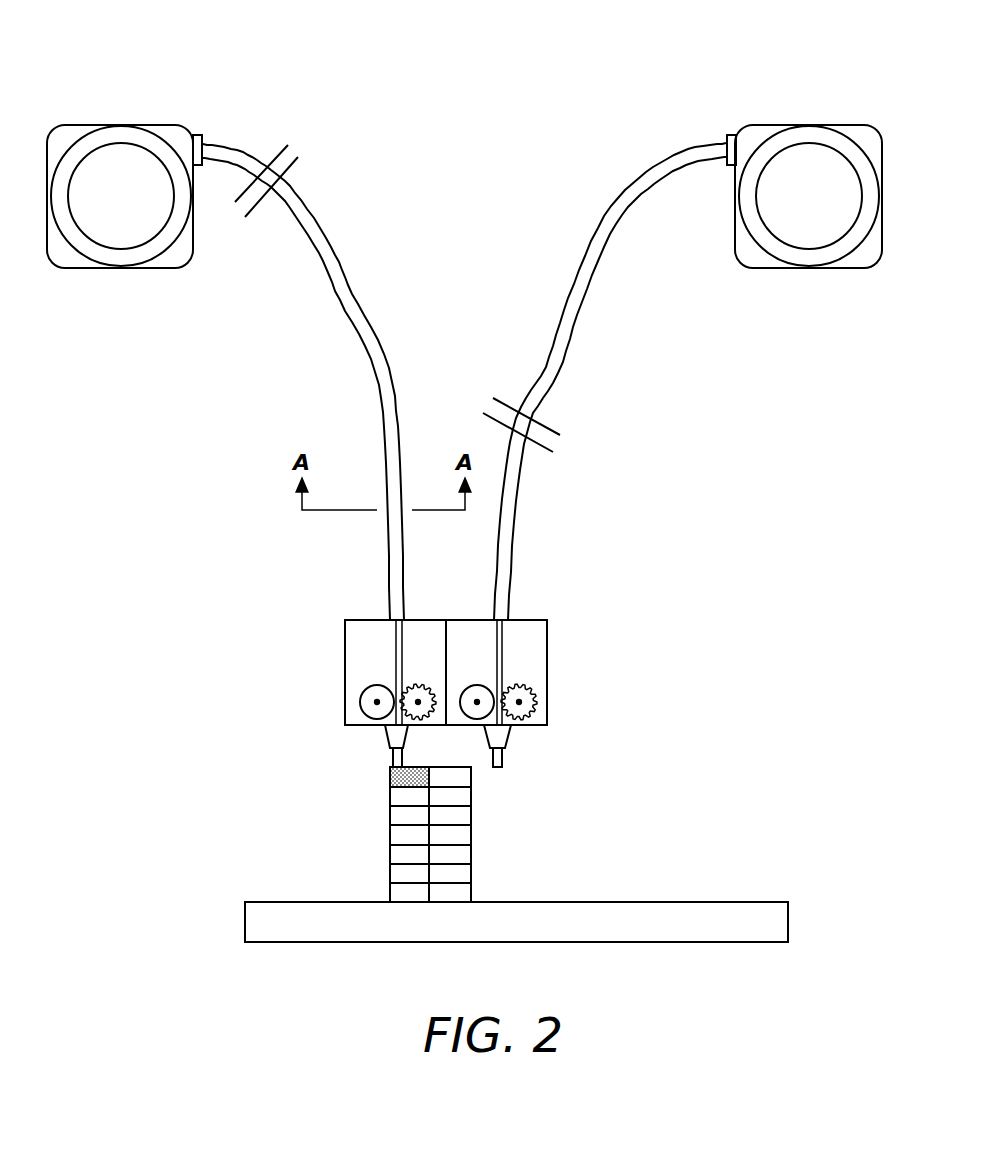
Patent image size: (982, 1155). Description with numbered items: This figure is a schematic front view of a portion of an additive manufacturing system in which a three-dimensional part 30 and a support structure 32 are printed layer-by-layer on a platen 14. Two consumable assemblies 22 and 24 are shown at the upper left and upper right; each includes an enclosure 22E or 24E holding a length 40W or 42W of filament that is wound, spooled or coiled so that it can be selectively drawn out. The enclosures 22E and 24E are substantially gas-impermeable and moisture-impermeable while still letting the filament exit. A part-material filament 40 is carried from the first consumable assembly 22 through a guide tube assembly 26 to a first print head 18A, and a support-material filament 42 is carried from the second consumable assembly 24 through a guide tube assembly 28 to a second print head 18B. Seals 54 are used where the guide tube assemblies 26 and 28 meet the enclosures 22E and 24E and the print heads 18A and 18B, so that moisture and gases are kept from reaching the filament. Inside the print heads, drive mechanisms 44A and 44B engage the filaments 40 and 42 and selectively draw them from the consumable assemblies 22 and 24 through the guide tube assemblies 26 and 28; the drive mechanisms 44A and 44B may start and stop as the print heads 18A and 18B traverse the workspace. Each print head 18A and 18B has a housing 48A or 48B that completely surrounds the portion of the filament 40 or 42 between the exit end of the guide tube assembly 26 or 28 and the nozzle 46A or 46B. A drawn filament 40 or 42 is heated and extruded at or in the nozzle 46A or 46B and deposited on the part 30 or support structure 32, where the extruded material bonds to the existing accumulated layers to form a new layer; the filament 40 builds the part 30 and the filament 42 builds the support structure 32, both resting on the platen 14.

The platen 14 is at (612, 901).
The print head 18A is at (346, 646).
The print head 18B is at (547, 701).
The consumable assembly 22 is at (127, 122).
The enclosure 22E is at (77, 125).
The consumable assembly 24 is at (818, 122).
The enclosure 24E is at (762, 125).
The guide tube assembly 26 is at (379, 374).
The guide tube assembly 28 is at (558, 374).
The 3D part 30 is at (390, 828).
The support structure 32 is at (473, 802).
The filament 40 is at (401, 643).
The length of filament 40W is at (126, 252).
The filament 42 is at (503, 642).
The length of filament 42W is at (813, 252).
The drive mechanism 44A is at (425, 718).
The drive mechanism 44B is at (527, 718).
The nozzle 46A is at (385, 742).
The nozzle 46B is at (510, 745).
The housing 48A is at (357, 620).
The housing 48B is at (547, 658).
The seal 54 is at (197, 133).